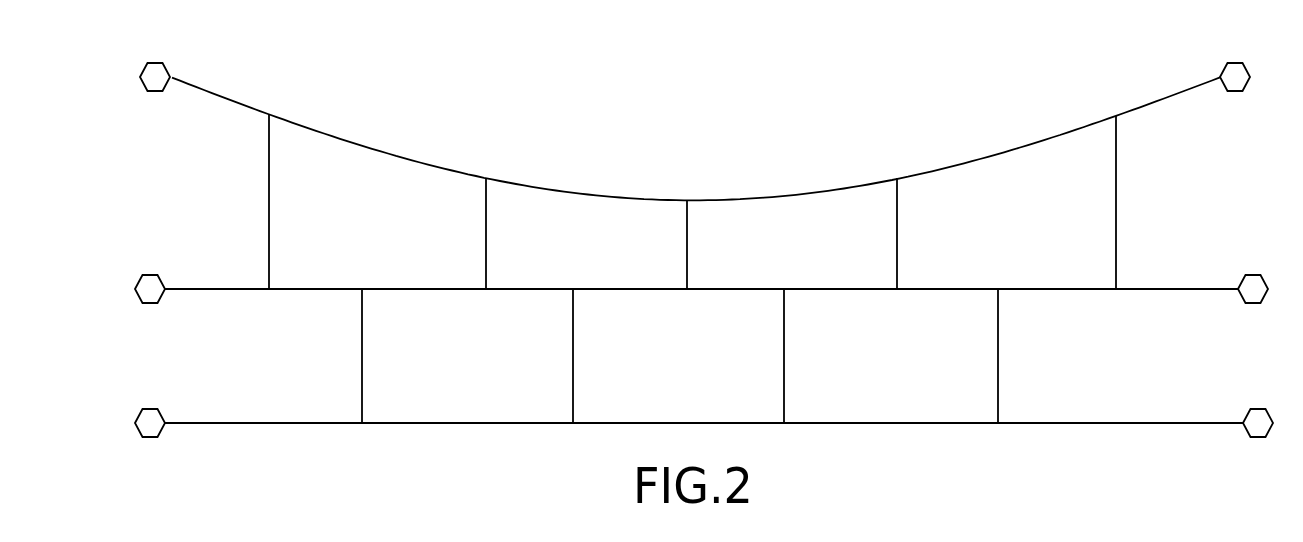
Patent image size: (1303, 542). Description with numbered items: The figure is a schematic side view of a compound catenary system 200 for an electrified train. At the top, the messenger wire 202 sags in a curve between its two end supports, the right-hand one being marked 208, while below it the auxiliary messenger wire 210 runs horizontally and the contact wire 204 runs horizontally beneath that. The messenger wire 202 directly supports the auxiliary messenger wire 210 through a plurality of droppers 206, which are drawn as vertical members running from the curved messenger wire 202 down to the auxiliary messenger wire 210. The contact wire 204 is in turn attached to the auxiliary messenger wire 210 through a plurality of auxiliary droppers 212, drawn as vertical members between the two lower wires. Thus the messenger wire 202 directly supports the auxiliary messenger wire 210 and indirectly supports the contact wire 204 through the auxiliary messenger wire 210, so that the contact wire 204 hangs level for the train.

The compound catenary system 200 is at (824, 143).
The messenger wire 202 is at (446, 167).
The contact wire 204 is at (1069, 424).
The droppers 206 is at (897, 233).
The end node connector 208 is at (1235, 62).
The auxiliary messenger wire 210 is at (1140, 289).
The auxiliary droppers 212 is at (784, 375).